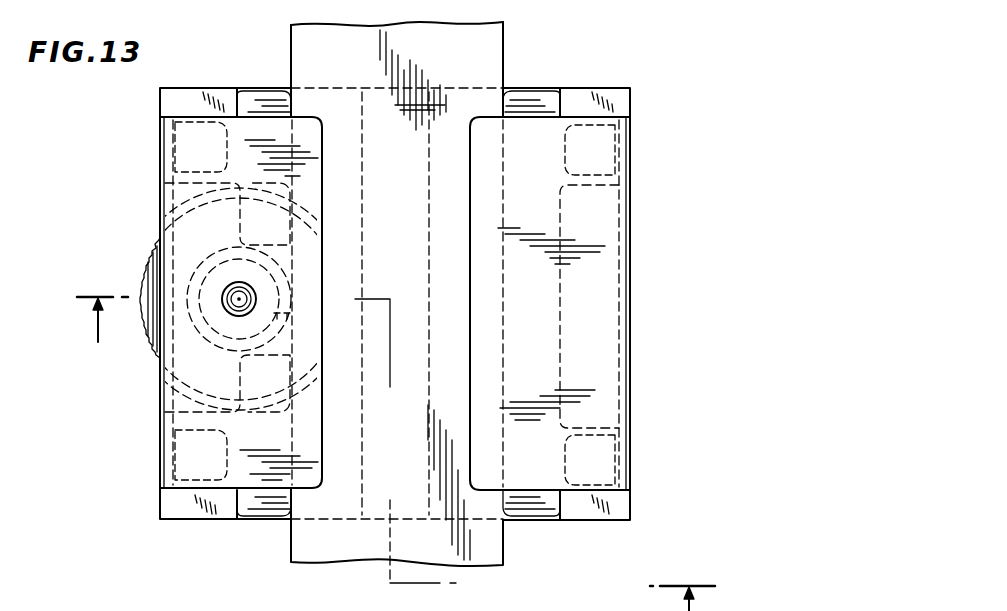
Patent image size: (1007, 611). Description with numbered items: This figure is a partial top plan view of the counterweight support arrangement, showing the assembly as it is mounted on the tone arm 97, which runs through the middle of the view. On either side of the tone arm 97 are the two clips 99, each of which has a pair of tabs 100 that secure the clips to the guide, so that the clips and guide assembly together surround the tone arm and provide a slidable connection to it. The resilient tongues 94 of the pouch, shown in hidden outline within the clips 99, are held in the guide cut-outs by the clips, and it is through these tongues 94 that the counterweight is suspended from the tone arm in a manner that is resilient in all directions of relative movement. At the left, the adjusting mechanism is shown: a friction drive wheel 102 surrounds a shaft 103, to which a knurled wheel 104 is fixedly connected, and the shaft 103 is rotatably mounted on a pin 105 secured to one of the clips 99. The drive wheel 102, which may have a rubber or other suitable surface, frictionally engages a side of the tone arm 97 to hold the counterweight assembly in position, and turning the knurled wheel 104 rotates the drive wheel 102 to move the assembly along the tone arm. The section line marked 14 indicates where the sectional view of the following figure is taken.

The tone arm 97 is at (352, 75).
The clips 99 is at (192, 400).
The tabs 100 is at (538, 100).
The tongues 94 is at (165, 143).
The knurled wheel 104 is at (149, 266).
The pin 105 is at (239, 316).
The friction drive wheel 102 is at (232, 252).
The shaft 103 is at (276, 318).
The section line 14- 14 is at (387, 454).